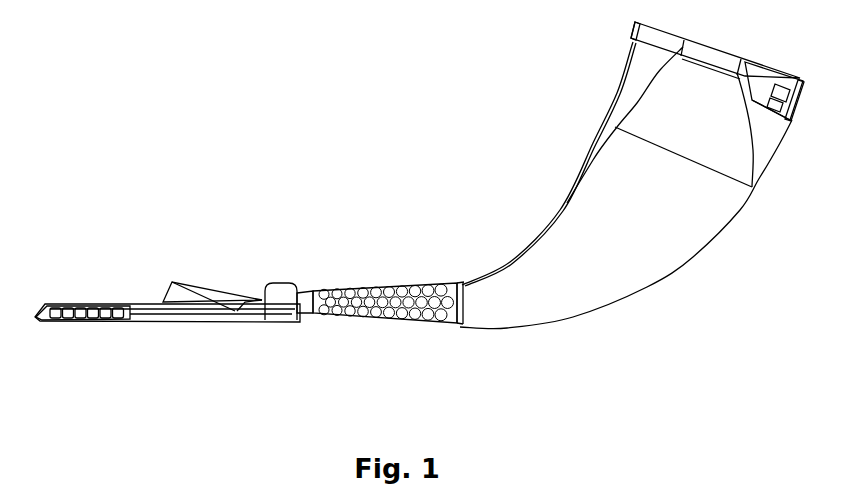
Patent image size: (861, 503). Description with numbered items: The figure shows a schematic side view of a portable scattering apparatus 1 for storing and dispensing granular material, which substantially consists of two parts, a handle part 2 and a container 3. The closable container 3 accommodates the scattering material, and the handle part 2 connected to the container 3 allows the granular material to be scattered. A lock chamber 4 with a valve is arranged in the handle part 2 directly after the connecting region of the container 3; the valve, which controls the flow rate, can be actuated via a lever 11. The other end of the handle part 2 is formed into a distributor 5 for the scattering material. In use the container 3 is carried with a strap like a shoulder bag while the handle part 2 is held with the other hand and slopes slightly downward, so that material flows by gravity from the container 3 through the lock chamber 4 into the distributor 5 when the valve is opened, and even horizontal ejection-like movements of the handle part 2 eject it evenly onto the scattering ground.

The portable scattering apparatus 1 is at (247, 116).
The handle part 2 is at (303, 330).
The container 3 is at (312, 277).
The lock chamber 4 is at (278, 303).
The distributor 5 is at (77, 310).
The lever 11 is at (230, 300).